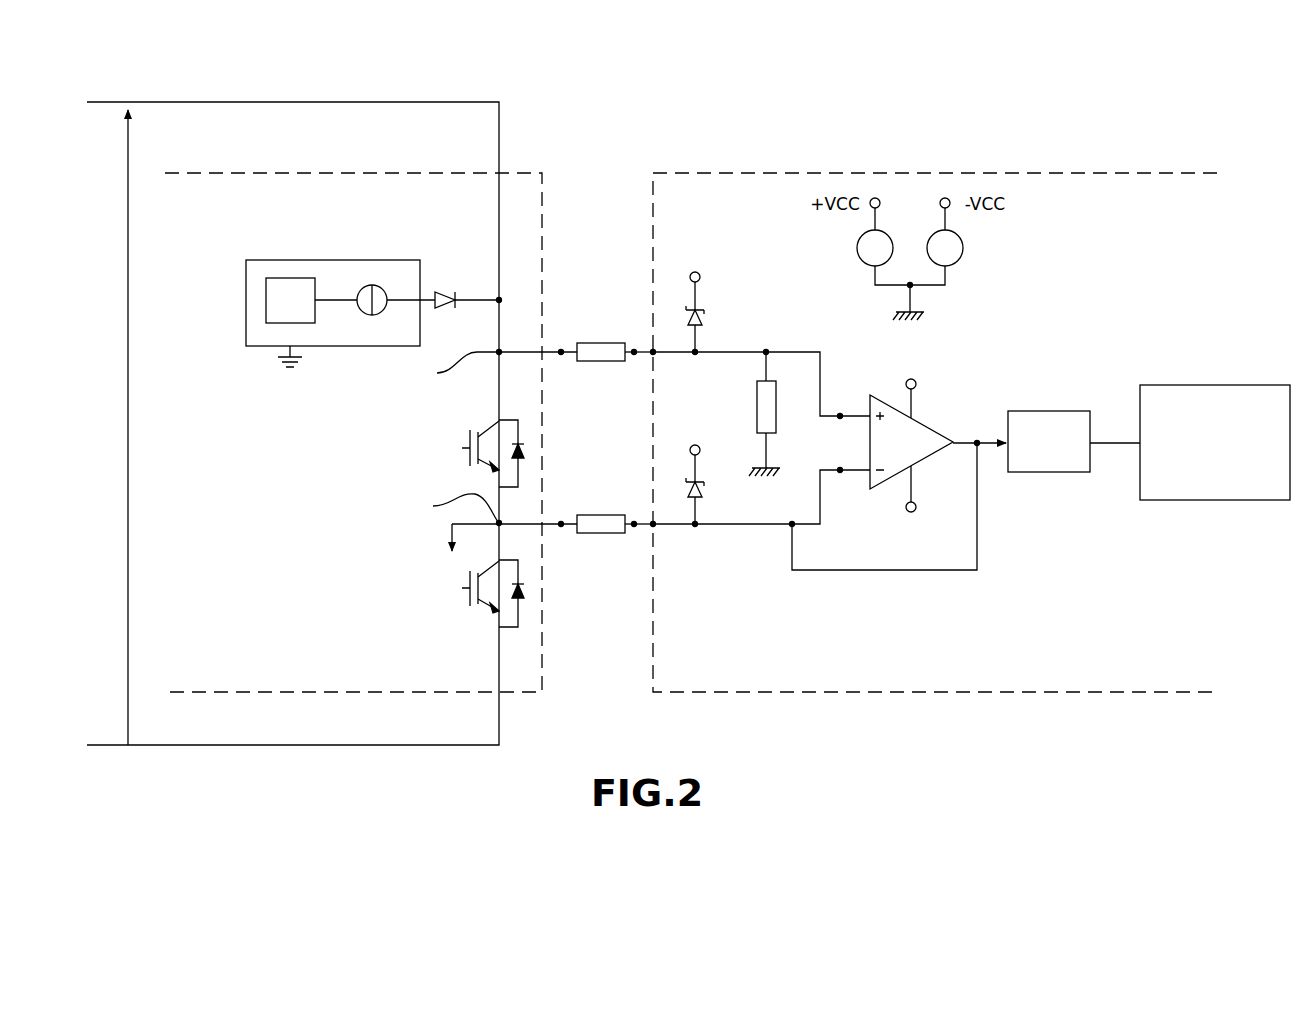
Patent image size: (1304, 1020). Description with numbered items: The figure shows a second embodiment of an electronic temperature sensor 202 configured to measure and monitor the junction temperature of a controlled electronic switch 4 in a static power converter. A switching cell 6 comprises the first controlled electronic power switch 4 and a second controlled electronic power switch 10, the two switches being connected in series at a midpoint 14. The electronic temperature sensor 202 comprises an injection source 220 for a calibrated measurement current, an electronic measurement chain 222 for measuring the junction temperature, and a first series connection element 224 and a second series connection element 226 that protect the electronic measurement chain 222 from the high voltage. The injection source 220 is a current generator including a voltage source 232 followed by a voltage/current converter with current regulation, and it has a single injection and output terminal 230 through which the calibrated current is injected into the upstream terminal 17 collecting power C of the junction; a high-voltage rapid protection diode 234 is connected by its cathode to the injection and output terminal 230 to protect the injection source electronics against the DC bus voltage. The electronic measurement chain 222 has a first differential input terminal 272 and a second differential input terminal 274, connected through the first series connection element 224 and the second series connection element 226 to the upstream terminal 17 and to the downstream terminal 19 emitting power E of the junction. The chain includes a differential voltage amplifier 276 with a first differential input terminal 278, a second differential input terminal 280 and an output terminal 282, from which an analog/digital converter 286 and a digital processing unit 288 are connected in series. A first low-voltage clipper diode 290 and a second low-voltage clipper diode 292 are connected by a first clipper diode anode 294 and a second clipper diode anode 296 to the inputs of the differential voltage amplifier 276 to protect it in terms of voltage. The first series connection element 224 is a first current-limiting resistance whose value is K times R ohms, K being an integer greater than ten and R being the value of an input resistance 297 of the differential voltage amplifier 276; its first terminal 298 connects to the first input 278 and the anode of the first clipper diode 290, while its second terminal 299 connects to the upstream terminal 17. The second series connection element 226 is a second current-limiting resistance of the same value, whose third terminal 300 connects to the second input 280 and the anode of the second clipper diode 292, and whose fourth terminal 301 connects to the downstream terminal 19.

The midpoint 14 is at (98, 514).
The first controlled electronic power switch 4 is at (462, 448).
The switching cell 6 is at (435, 520).
The second controlled electronic power switch 10 is at (462, 588).
The upstream terminal collecting power C 17 is at (467, 348).
The downstream terminal emitting power E 19 is at (464, 520).
The electronic temperature sensor 202 is at (334, 156).
The injection source 220 is at (318, 320).
The electronic measurement chain 222 is at (738, 575).
The first series connection element 224 is at (601, 345).
The second series connection element 226 is at (591, 515).
The injection and output terminal 230 is at (472, 298).
The voltage source 232 is at (279, 278).
The high-voltage rapid protection diode 234 is at (444, 292).
The first differential input terminal 272 is at (653, 354).
The second differential input terminal 274 is at (655, 526).
The differential voltage amplifier 276 is at (920, 458).
The first differential input terminal of the amplifier 278 is at (840, 414).
The second differential input terminal of the amplifier 280 is at (840, 472).
The output terminal 282 is at (976, 441).
The analog/digital converter 286 is at (1046, 474).
The digital processing unit 288 is at (1180, 502).
The first low-voltage clipper diode 290 is at (722, 298).
The second low-voltage clipper diode 292 is at (712, 470).
The first clipper diode anode 294 is at (700, 324).
The second clipper diode anode 296 is at (700, 496).
The input resistance 297 is at (766, 407).
The first terminal of the first element 298 is at (634, 350).
The second first element terminal 299 is at (561, 350).
The third second element terminal 300 is at (634, 522).
The fourth second element terminal 301 is at (561, 526).